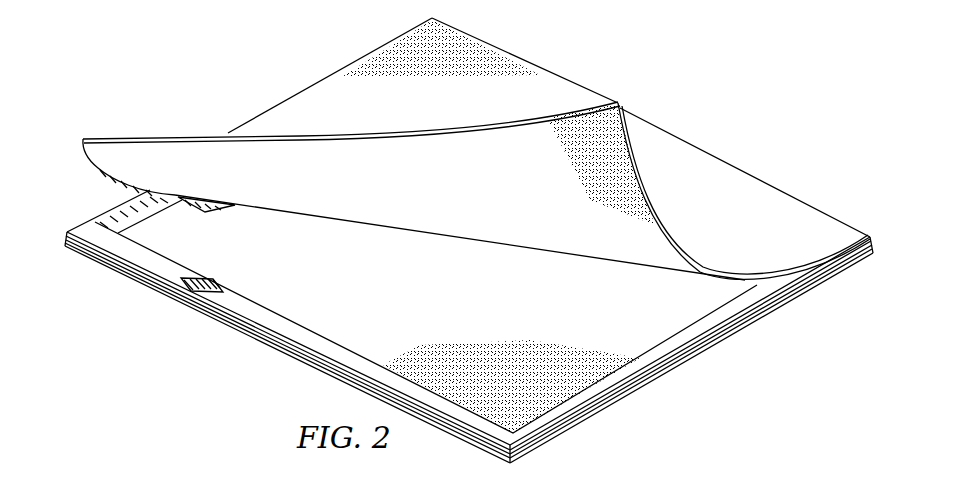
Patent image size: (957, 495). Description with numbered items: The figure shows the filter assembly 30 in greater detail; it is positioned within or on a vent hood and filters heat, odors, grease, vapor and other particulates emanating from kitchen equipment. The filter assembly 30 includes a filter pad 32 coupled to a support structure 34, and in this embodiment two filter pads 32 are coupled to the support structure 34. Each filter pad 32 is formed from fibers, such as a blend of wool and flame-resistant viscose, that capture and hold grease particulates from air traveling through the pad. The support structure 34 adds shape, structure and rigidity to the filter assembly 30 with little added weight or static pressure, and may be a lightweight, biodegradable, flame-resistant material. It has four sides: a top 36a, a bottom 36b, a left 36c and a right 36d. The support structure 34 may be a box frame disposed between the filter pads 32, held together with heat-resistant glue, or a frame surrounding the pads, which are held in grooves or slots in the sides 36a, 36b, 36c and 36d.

The filter assembly 30 is at (580, 68).
The filter pad 32 is at (442, 222).
The support structure 34 is at (459, 285).
The top side 36a is at (104, 214).
The bottom side 36b is at (270, 347).
The left side 36c is at (667, 377).
The right side 36d is at (760, 178).